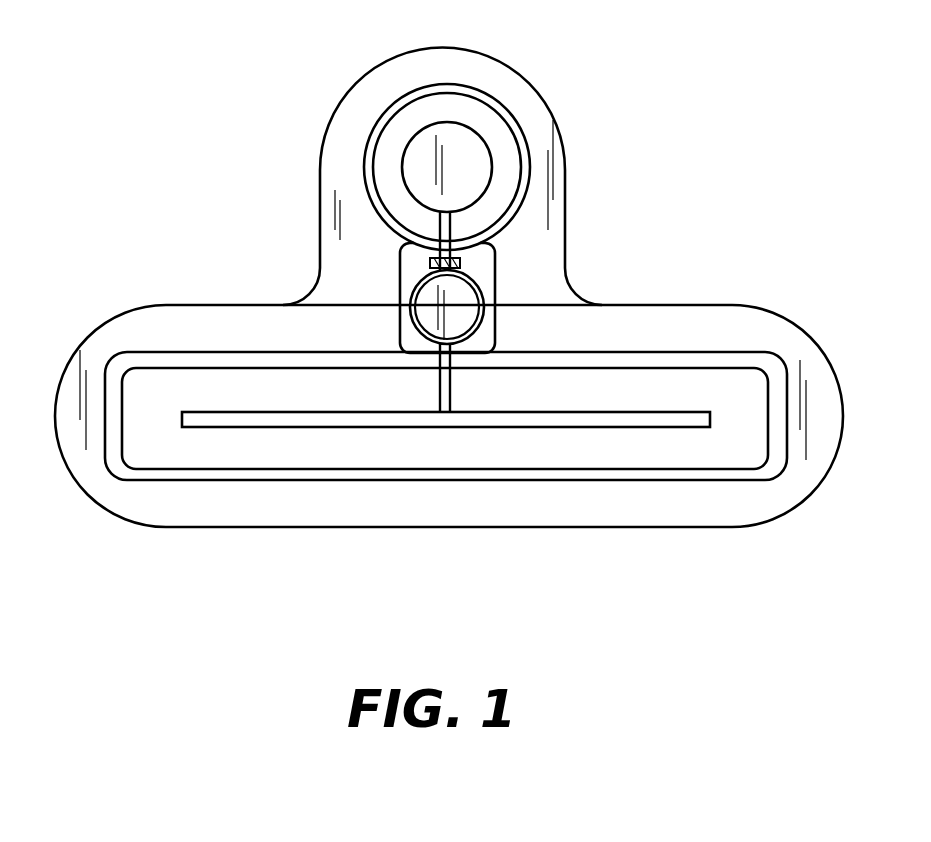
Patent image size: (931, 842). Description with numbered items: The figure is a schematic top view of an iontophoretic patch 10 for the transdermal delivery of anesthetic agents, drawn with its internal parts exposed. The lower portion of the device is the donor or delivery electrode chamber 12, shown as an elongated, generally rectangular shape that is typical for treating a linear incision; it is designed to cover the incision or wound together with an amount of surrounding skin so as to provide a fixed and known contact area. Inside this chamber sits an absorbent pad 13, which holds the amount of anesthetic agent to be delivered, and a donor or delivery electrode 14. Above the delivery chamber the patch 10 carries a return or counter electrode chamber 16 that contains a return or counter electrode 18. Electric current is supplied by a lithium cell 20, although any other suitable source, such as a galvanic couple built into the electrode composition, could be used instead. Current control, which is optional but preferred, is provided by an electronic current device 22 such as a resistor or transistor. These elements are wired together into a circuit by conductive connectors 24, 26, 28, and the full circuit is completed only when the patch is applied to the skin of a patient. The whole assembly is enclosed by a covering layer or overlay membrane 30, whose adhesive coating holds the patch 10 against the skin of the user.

The patch 10 is at (250, 117).
The donor electrode chamber 12 is at (103, 377).
The absorbent pad 13 is at (195, 378).
The donor electrode 14 is at (267, 417).
The return electrode chamber 16 is at (497, 142).
The return electrode 18 is at (463, 142).
The lithium cell 20 is at (470, 300).
The electronic current device 22 is at (462, 258).
The conductive connector 24 is at (450, 228).
The conductive connector 26 is at (443, 268).
The conductive connector 28 is at (448, 387).
The overlay membrane 30 is at (767, 325).